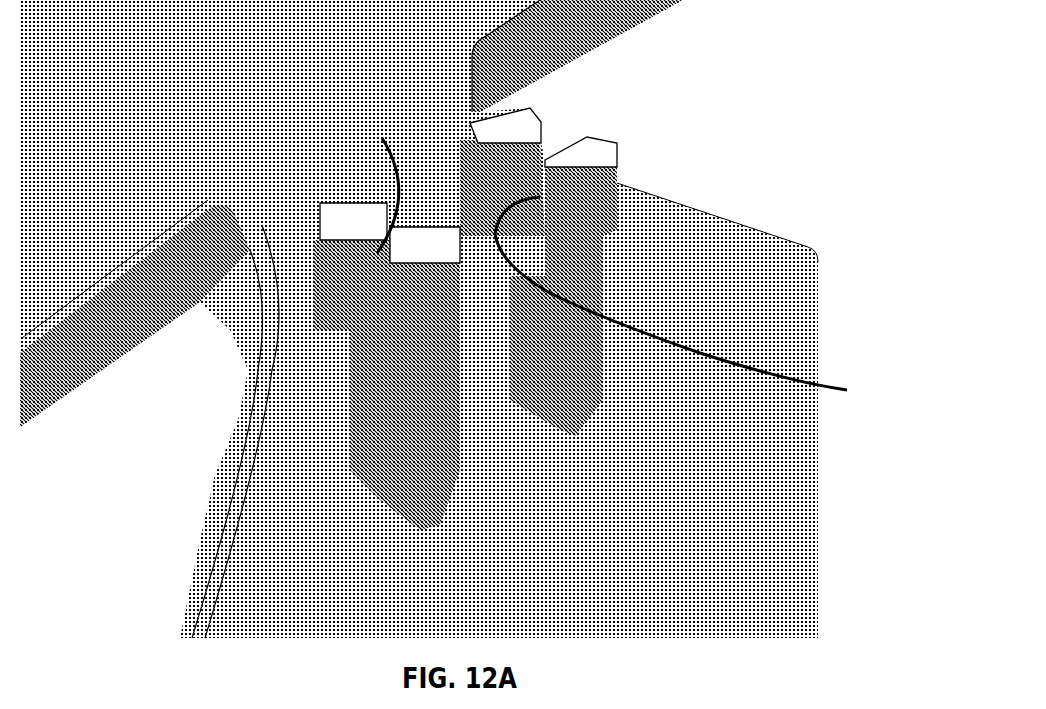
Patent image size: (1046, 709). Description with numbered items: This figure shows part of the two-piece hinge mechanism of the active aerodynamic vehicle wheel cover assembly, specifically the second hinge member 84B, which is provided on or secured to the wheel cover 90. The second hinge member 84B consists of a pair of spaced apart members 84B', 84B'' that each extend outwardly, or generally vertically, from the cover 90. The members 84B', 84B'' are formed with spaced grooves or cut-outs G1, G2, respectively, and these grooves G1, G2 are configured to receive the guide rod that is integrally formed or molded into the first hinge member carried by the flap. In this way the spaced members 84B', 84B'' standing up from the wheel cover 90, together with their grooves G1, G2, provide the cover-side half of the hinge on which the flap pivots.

The second hinge member 84B is at (616, 156).
The spaced apart member 84B' is at (382, 216).
The spaced apart member 84B'' is at (423, 289).
The wheel cover 90 is at (650, 217).
The groove G1 is at (550, 140).
The groove G2 is at (197, 409).